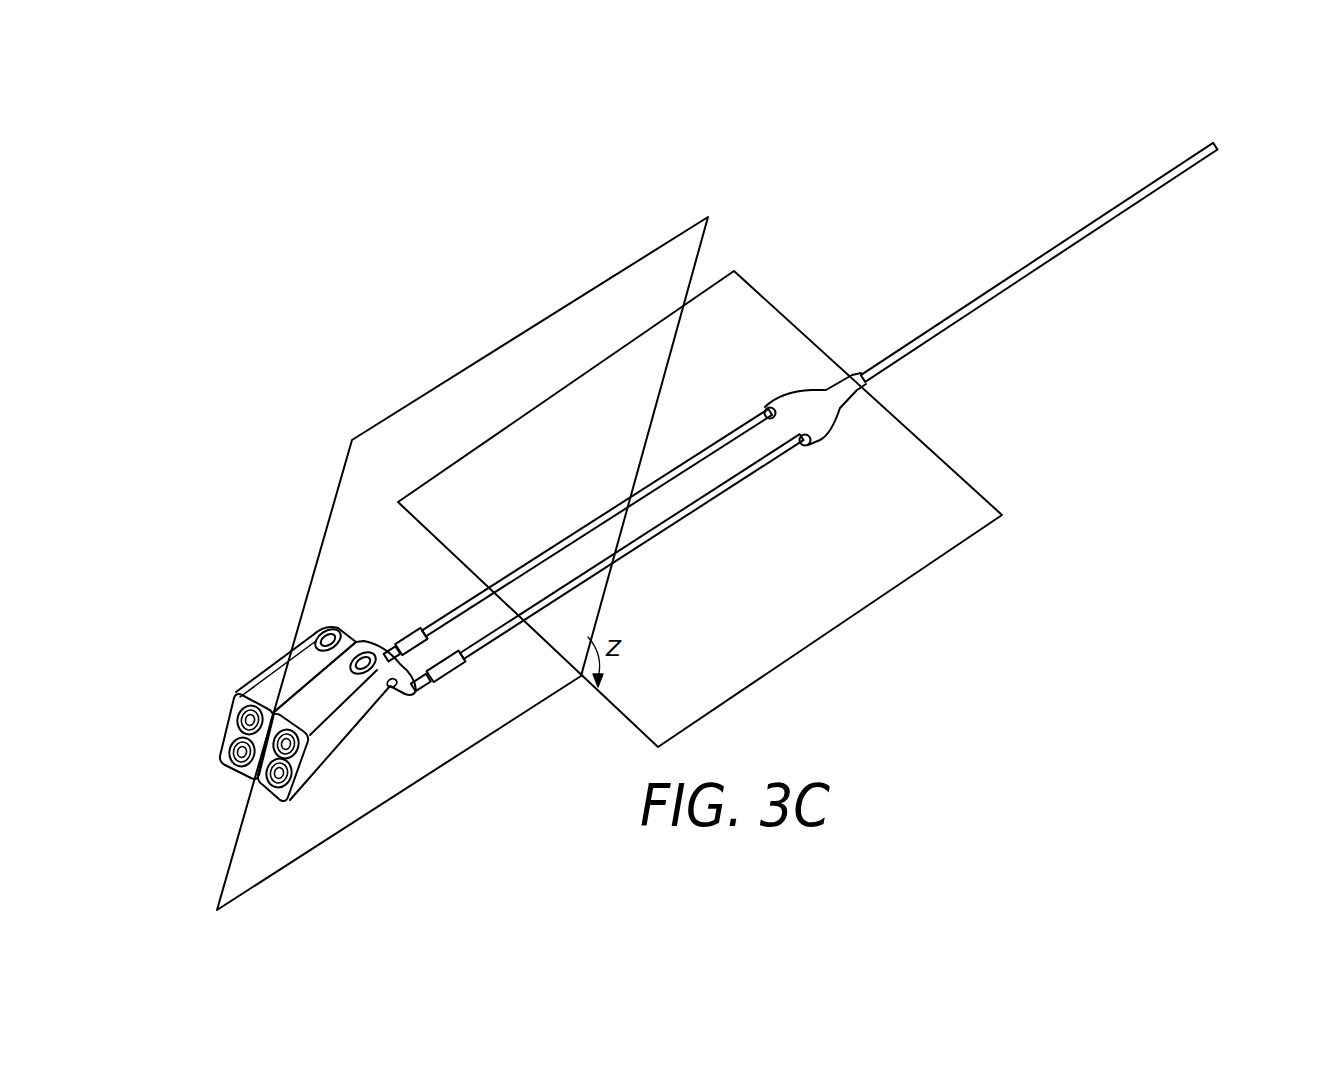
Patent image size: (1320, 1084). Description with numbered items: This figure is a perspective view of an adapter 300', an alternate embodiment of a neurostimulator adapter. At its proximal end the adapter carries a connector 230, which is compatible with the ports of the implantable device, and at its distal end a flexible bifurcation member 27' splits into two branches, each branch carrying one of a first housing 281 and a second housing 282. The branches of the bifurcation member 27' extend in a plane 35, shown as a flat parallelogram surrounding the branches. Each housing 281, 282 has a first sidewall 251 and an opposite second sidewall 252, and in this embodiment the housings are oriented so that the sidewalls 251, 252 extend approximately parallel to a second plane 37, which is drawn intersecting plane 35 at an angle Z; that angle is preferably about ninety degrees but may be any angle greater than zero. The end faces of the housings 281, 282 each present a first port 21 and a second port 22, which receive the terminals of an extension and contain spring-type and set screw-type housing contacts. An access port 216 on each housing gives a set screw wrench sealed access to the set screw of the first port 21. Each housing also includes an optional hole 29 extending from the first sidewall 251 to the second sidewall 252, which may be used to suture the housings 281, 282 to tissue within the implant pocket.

The adapter 300' is at (864, 96).
The connector 230 is at (1240, 149).
The plane 35 is at (743, 280).
The plane 37 is at (415, 420).
The flexible bifurcation member 27' is at (635, 556).
The first housing 281 is at (234, 675).
The second housing 282 is at (346, 796).
The first sidewall 251 is at (279, 655).
The second sidewall 252 is at (358, 732).
The access port 216 is at (358, 655).
The first port 21 is at (239, 703).
The second port 22 is at (224, 759).
The hole 29 is at (397, 687).